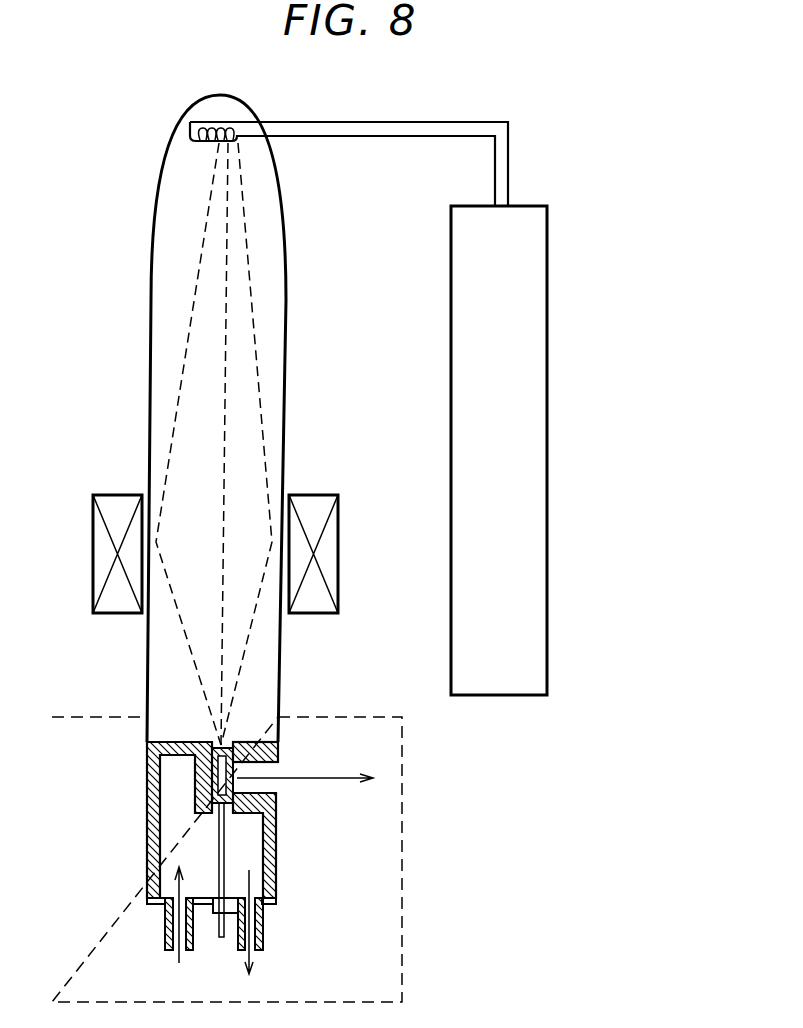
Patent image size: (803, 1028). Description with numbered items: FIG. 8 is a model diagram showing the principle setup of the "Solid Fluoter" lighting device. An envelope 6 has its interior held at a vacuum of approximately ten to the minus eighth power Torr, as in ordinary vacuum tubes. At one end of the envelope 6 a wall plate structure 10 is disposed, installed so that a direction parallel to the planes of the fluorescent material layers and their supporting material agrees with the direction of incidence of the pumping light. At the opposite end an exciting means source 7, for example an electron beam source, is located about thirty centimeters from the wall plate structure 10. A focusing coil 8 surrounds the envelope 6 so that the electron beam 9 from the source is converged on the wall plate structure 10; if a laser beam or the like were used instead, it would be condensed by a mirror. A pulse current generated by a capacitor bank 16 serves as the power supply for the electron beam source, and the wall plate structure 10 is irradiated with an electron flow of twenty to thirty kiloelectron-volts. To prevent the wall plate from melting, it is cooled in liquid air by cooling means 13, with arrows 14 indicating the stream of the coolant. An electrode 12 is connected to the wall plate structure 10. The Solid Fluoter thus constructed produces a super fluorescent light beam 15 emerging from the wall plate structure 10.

The envelope 6 is at (283, 405).
The exciting means source 7 is at (300, 122).
The focusing coil 8 is at (338, 548).
The electron beam 9 is at (253, 305).
The wall plate structure 10 is at (212, 781).
The electrode 12 is at (219, 930).
The cooling means 13 is at (165, 882).
The arrows indicating the stream of the coolant 14 is at (177, 952).
The super fluorescent light beam 15 is at (320, 780).
The capacitor bank 16 is at (501, 688).